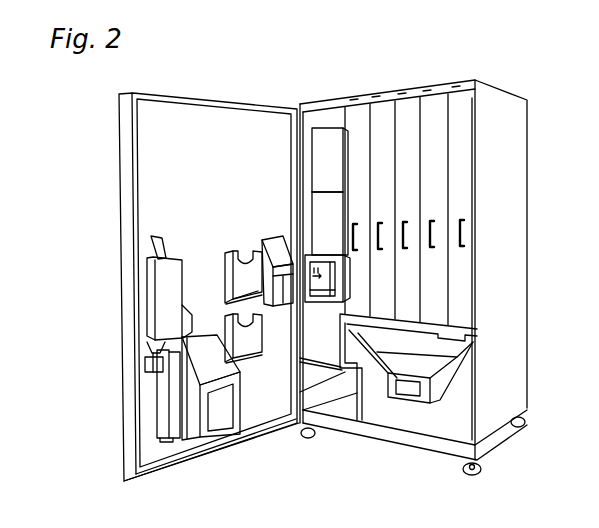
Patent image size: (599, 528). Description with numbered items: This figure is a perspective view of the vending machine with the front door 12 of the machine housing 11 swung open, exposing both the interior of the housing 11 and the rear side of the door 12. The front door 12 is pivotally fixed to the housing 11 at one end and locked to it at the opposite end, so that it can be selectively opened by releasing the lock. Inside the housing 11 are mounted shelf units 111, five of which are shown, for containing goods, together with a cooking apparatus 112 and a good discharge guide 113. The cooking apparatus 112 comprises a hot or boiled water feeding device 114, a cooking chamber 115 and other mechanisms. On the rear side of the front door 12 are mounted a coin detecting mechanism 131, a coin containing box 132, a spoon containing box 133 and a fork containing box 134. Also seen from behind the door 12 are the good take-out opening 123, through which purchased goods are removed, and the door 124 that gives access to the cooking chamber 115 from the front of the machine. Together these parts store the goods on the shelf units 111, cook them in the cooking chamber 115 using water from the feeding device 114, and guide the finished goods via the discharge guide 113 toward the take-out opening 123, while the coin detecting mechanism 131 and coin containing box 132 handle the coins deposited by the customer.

The housing 11 is at (515, 205).
The front door 12 is at (130, 174).
The shelf units 111 is at (403, 112).
The cooking apparatus 112 is at (325, 170).
The good discharge guide 113 is at (448, 375).
The hot or boiled water feeding device 114 is at (318, 148).
The cooking chamber 115 is at (326, 298).
The good take-out opening 123 is at (216, 432).
The door for access to a cooking chamber 124 is at (281, 300).
The coin detecting mechanism 131 is at (165, 299).
The coin containing box 132 is at (160, 407).
The spoon containing box 133 is at (249, 358).
The fork containing box 134 is at (238, 254).